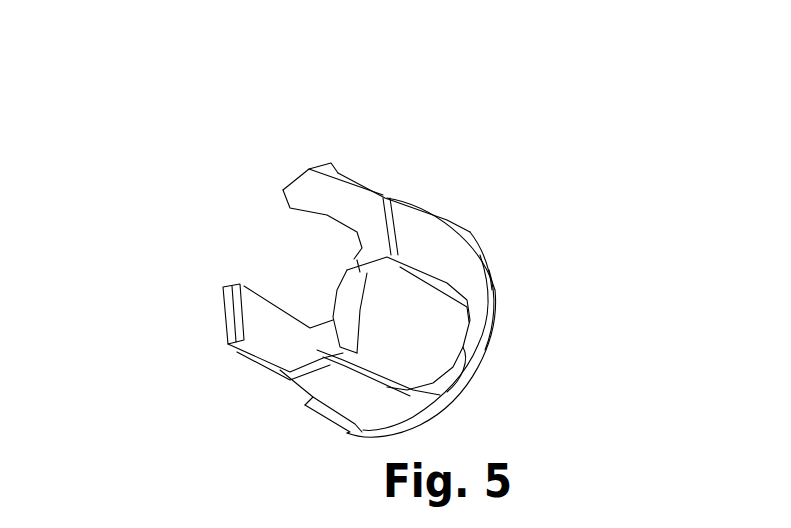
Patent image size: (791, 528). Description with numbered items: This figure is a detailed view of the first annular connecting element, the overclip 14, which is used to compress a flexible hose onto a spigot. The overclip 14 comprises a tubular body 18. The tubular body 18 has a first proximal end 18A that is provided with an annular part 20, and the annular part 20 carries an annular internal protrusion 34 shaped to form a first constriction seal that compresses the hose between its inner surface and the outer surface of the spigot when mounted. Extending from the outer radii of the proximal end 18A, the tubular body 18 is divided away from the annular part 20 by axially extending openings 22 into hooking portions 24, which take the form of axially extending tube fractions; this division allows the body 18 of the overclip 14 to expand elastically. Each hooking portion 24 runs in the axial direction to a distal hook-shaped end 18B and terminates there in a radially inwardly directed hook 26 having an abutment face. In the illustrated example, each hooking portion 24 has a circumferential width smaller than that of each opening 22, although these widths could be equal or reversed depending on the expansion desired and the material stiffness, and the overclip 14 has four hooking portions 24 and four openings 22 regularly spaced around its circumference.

The first element (overclip) 14 is at (474, 183).
The tubular body 18 is at (464, 267).
The first proximal end 18A is at (502, 292).
The distal hook-shaped end 18B is at (230, 306).
The annular part 20 is at (447, 373).
The axially extending opening 22 is at (260, 305).
The hooking portion 24 is at (340, 400).
The radially inwardly directed hook 26 is at (310, 177).
The annular internal protrusion 34 is at (363, 265).